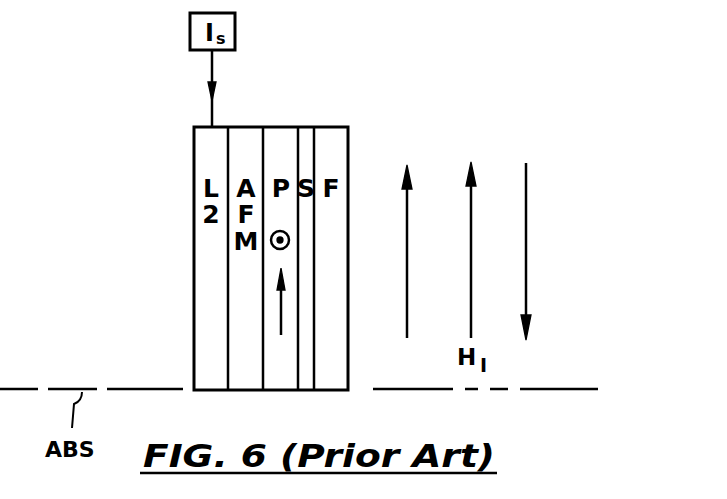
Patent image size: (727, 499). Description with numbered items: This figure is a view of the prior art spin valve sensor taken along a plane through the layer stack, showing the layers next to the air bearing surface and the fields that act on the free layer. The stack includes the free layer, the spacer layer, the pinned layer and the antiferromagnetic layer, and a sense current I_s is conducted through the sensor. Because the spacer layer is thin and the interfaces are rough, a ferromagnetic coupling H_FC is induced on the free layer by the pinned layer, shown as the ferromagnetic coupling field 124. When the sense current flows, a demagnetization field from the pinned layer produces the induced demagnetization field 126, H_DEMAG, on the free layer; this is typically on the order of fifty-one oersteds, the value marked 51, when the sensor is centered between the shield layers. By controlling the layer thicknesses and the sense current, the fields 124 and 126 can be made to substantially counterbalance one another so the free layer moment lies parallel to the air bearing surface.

The ferromagnetic coupling field 124 is at (408, 274).
The induced demagnetization field 126 is at (564, 269).
The demagnetizing field magnitude (51 Oe) 51 is at (570, 178).